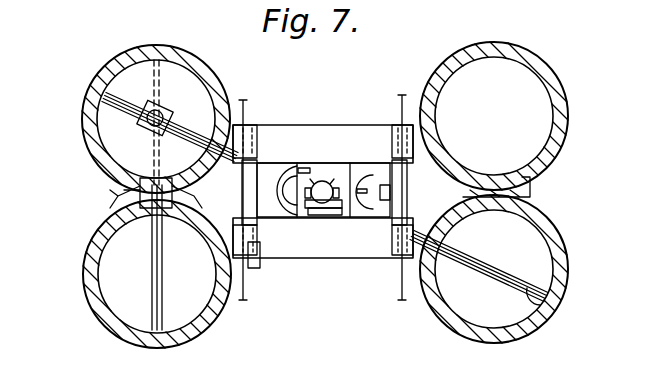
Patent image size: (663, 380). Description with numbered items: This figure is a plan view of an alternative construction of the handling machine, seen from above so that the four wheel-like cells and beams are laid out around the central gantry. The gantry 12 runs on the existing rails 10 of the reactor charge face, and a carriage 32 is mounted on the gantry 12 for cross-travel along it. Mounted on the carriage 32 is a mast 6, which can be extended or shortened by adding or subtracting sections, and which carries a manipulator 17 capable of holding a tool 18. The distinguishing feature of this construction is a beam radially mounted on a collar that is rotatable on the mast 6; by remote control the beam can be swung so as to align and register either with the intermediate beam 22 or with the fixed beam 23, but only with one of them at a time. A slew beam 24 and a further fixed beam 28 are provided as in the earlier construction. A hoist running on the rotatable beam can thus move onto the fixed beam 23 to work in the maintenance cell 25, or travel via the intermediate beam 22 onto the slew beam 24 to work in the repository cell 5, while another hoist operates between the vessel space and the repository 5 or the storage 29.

The repository 5 is at (107, 125).
The mast 6 is at (334, 217).
The existing rails 10 is at (248, 107).
The gantry 12 is at (305, 133).
The manipulator 17 is at (372, 178).
The tool 18 is at (377, 205).
The intermediate beam 22 is at (226, 160).
The fixed beam 23 is at (543, 318).
The slew beam 24 is at (182, 127).
The maintenance cell 25 is at (520, 245).
The fixed beam 28 is at (157, 240).
The storage 29 is at (117, 258).
The carriage 32 is at (327, 170).